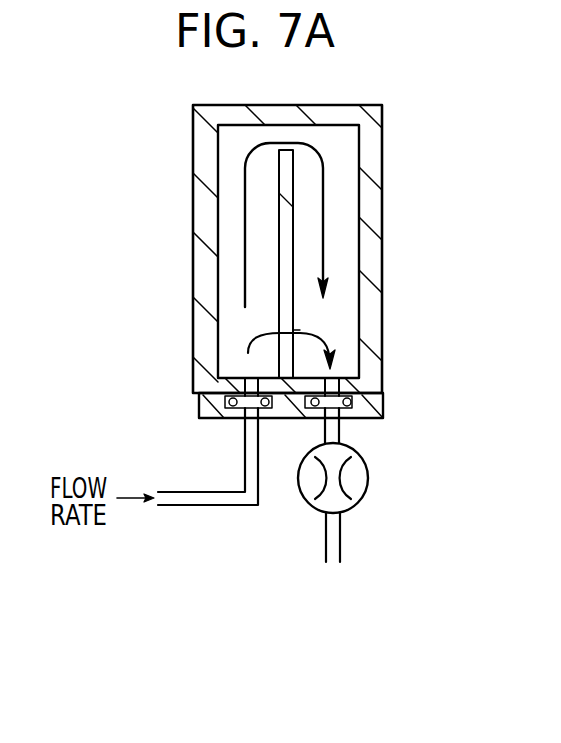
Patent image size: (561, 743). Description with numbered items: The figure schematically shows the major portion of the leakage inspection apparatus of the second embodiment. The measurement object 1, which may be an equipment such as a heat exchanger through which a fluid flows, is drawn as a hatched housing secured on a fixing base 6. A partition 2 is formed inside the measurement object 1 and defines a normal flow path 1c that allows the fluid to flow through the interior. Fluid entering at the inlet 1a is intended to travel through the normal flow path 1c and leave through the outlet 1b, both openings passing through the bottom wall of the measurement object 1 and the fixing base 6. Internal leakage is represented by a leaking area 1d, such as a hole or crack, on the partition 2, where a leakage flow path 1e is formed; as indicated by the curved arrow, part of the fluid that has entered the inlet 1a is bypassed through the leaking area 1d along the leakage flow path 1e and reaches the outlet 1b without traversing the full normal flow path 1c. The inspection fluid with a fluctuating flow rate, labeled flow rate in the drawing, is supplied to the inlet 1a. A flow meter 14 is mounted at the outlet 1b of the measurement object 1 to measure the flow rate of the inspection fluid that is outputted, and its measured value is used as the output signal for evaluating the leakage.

The measurement object 1 is at (383, 158).
The partition 2 is at (290, 233).
The normal flow path 1c is at (245, 185).
The leaking area 1d is at (281, 330).
The leakage flow path 1e is at (293, 332).
The inlet 1a is at (247, 378).
The outlet 1b is at (333, 376).
The fixing base 6 is at (200, 405).
The flow meter 14 is at (368, 472).